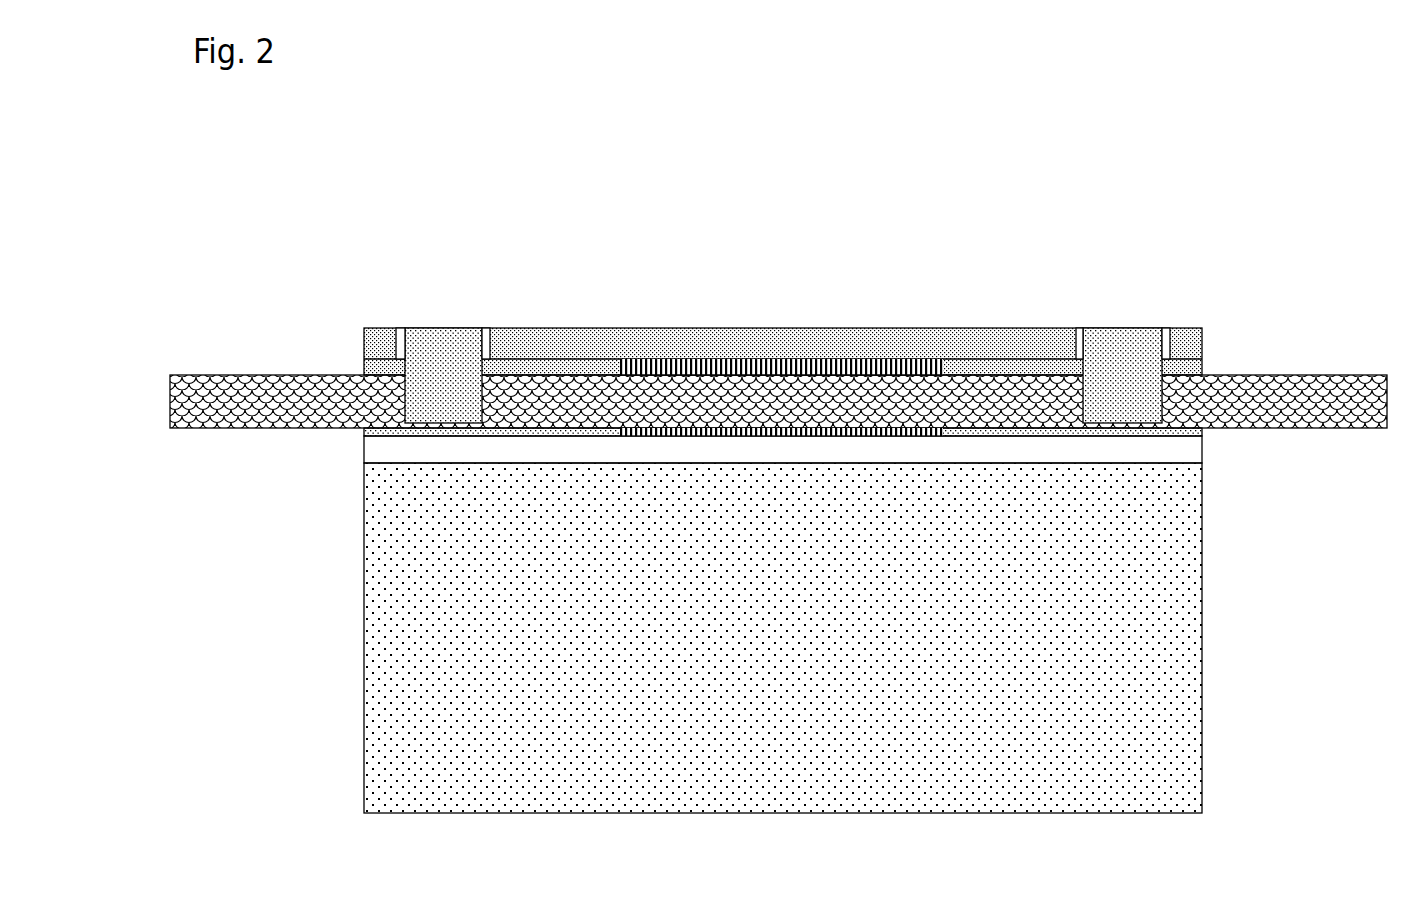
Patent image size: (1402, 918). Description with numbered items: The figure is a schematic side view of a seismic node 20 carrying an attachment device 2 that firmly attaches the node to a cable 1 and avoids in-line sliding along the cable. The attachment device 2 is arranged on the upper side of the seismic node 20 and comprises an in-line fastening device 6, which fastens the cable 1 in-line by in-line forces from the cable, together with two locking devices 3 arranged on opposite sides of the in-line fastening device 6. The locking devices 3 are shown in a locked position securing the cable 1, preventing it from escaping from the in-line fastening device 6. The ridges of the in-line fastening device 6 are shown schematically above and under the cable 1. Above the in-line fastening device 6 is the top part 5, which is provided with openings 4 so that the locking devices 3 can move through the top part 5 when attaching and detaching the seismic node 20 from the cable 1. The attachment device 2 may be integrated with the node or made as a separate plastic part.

The cable 1 is at (303, 405).
The attachment device 2 is at (1210, 450).
The locking device 3 is at (438, 387).
The openings 4 is at (490, 330).
The top part 5 is at (863, 342).
The in-line fastening device 6 is at (750, 358).
The seismic node 20 is at (783, 638).